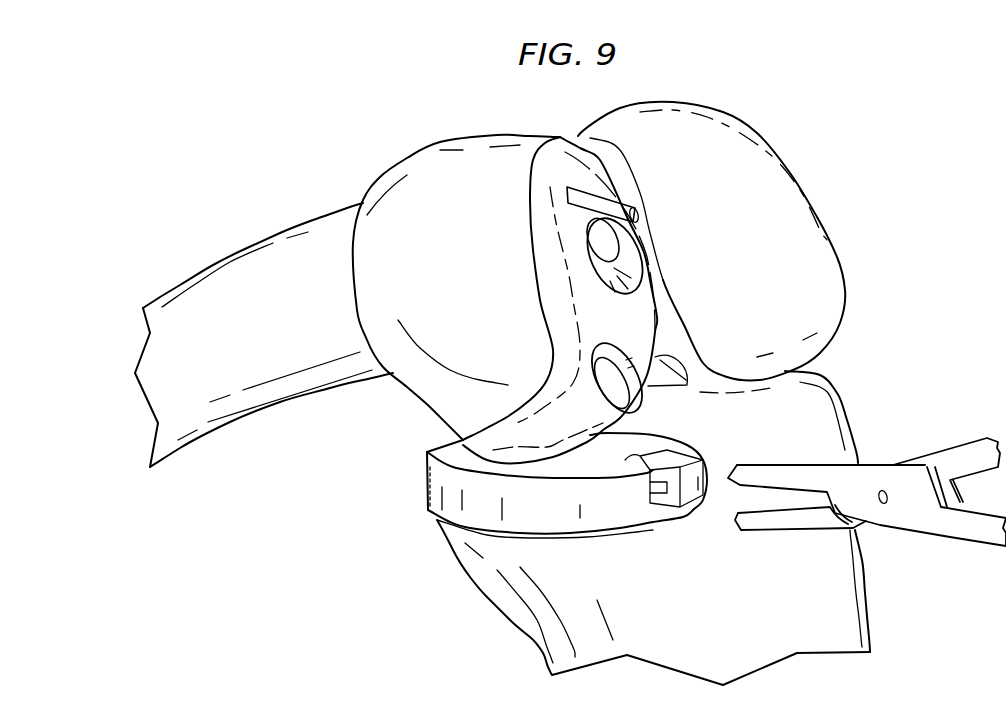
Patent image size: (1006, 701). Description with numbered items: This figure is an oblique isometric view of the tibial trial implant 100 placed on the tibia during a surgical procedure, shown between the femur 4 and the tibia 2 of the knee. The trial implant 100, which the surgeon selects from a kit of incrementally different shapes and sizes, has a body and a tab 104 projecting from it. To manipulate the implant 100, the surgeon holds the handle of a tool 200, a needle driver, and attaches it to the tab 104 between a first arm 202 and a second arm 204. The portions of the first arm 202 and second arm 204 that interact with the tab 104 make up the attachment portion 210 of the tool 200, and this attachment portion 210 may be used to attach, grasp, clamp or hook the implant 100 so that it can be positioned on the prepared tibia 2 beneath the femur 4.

The femur 4 is at (468, 271).
The tibia 2 is at (582, 578).
The tibial trial implant 100 is at (403, 488).
The tab 104 is at (653, 495).
The tool 200 is at (867, 512).
The first arm 202 is at (751, 474).
The second arm 204 is at (755, 525).
The attachment portion 210 is at (746, 541).